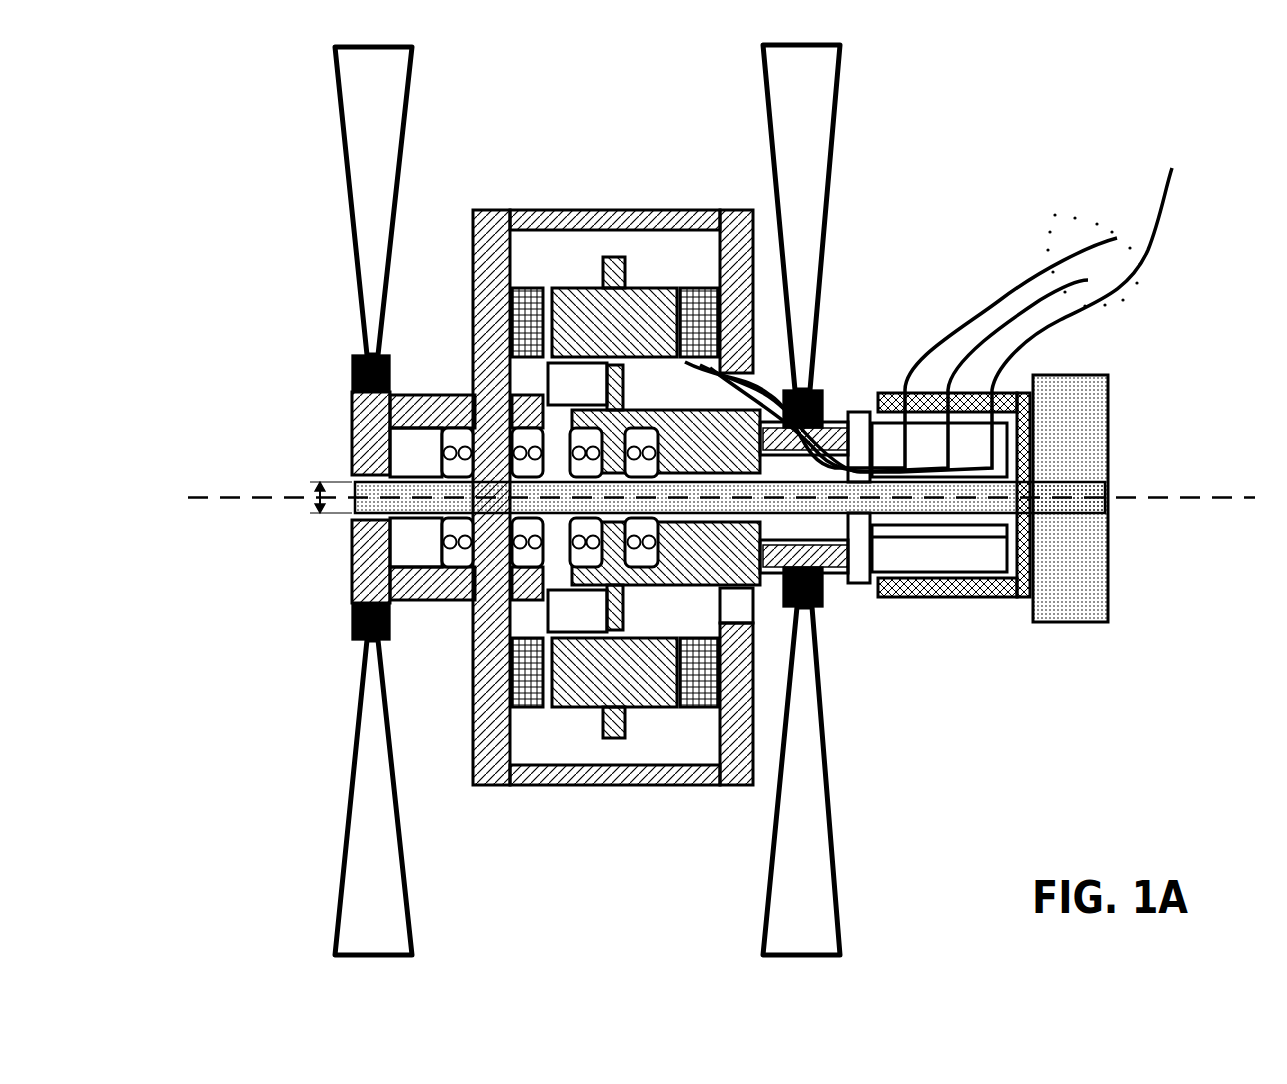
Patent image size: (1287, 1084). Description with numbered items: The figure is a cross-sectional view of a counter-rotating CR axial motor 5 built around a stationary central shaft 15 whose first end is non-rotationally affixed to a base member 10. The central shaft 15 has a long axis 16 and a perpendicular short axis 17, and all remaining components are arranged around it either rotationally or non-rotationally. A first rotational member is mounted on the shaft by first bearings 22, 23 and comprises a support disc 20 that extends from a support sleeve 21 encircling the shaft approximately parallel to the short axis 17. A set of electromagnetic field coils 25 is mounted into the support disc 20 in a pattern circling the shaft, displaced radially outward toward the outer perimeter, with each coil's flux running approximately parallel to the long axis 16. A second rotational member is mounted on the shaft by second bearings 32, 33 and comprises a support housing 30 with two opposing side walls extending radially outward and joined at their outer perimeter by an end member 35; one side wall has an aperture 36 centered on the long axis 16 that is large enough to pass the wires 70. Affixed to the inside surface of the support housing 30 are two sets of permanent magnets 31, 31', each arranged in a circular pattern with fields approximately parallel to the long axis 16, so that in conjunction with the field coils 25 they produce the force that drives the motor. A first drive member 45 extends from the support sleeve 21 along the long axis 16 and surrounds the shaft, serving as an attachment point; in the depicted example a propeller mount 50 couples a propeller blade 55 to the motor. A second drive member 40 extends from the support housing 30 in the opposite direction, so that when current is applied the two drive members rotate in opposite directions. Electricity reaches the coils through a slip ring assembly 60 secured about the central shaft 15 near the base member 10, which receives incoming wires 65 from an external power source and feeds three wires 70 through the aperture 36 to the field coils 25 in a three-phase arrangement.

The CR axial motor 5 is at (1135, 712).
The base member 10 is at (1075, 430).
The central shaft 15 is at (1073, 500).
The long axis 16 is at (277, 497).
The short axis 17 is at (320, 482).
The support disc 20 is at (612, 270).
The support sleeve 21 is at (723, 447).
The first bearing 22 is at (593, 588).
The first bearing 23 is at (592, 555).
The electromagnetic field coils 25 is at (587, 305).
The support housing 30 is at (492, 218).
The permanent magnets 31 is at (799, 473).
The permanent magnets 31' is at (471, 592).
The second bearing 32 is at (452, 462).
The second bearing 33 is at (522, 462).
The end member 35 is at (637, 218).
The aperture 36 is at (735, 600).
The second drive member 40 is at (452, 412).
The first drive member 45 is at (832, 423).
The propeller mount 50 is at (350, 372).
The propeller blade 55 is at (363, 95).
The slip ring assembly 60 is at (937, 548).
The incoming wires 65 is at (1060, 225).
The wires 70 is at (713, 345).